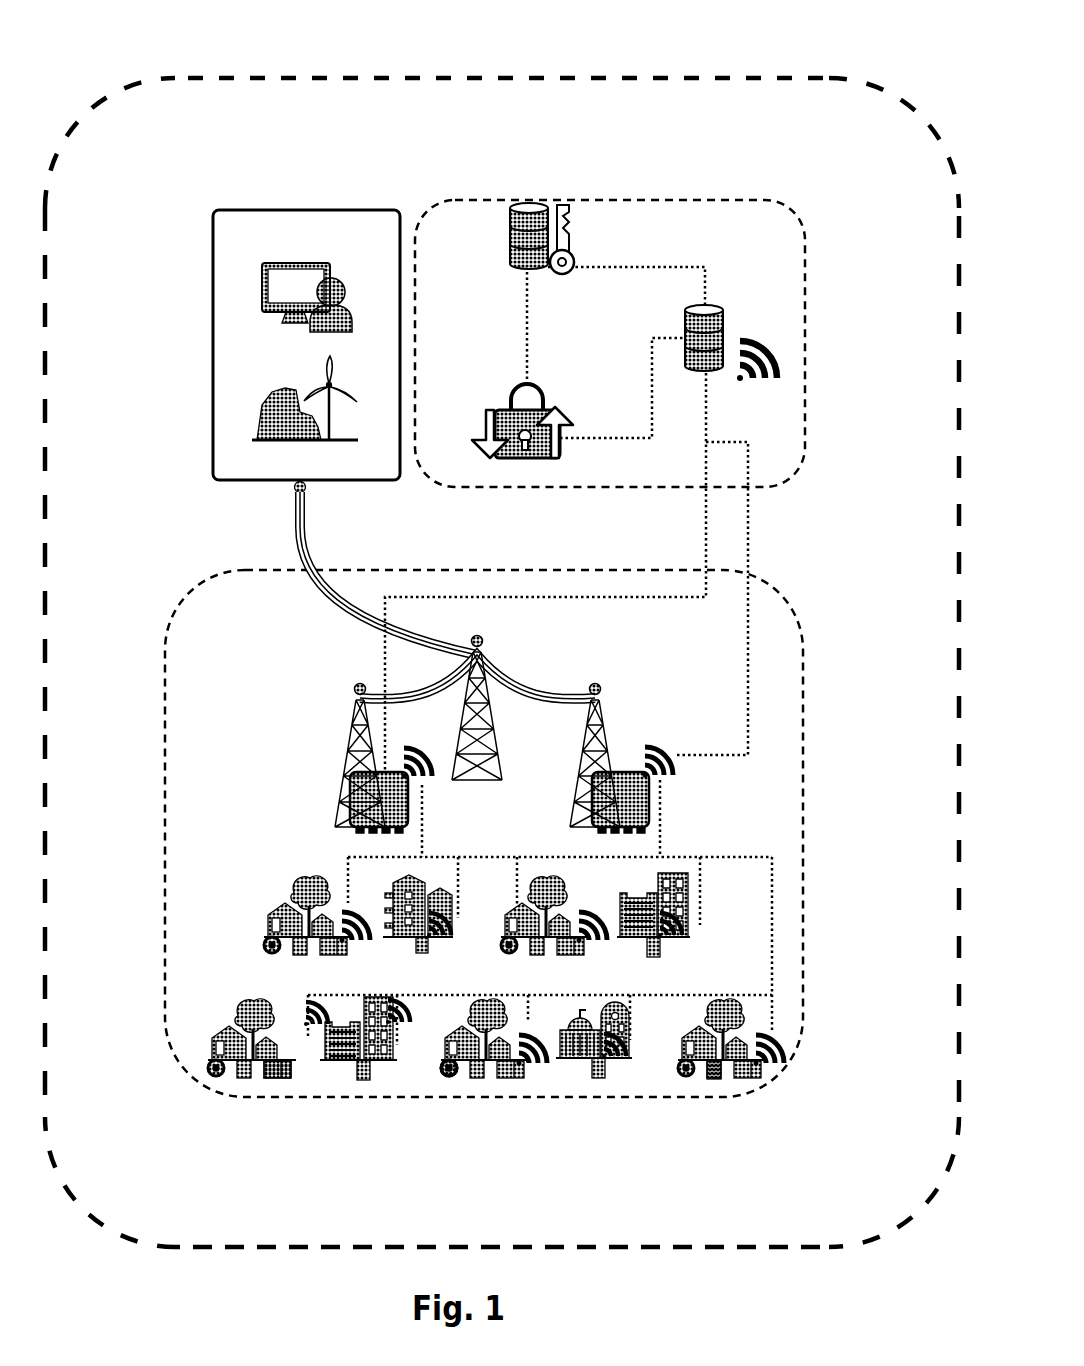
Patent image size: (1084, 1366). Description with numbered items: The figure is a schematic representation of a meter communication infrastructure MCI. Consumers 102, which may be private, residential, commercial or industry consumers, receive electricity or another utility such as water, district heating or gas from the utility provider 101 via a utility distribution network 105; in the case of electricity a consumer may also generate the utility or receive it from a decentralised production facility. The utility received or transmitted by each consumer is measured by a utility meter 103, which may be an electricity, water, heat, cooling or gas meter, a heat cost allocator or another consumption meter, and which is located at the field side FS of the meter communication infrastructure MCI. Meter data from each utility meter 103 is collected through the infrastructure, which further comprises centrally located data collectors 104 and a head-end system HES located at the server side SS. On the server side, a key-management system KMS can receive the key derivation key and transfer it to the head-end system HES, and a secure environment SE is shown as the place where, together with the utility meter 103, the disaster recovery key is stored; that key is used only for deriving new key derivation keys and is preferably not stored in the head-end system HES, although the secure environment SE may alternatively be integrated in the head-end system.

The utility provider 101 is at (213, 273).
The consumers 102 is at (263, 925).
The utility meter 103 is at (278, 1078).
The data collectors 104 is at (370, 790).
The utility distribution network 105 is at (300, 527).
The meter communication infrastructure MCI is at (652, 77).
The server side SS is at (790, 209).
The key-management system KMS is at (538, 200).
The head-end system HES is at (708, 337).
The secure environment SE is at (525, 442).
The field side FS is at (805, 609).